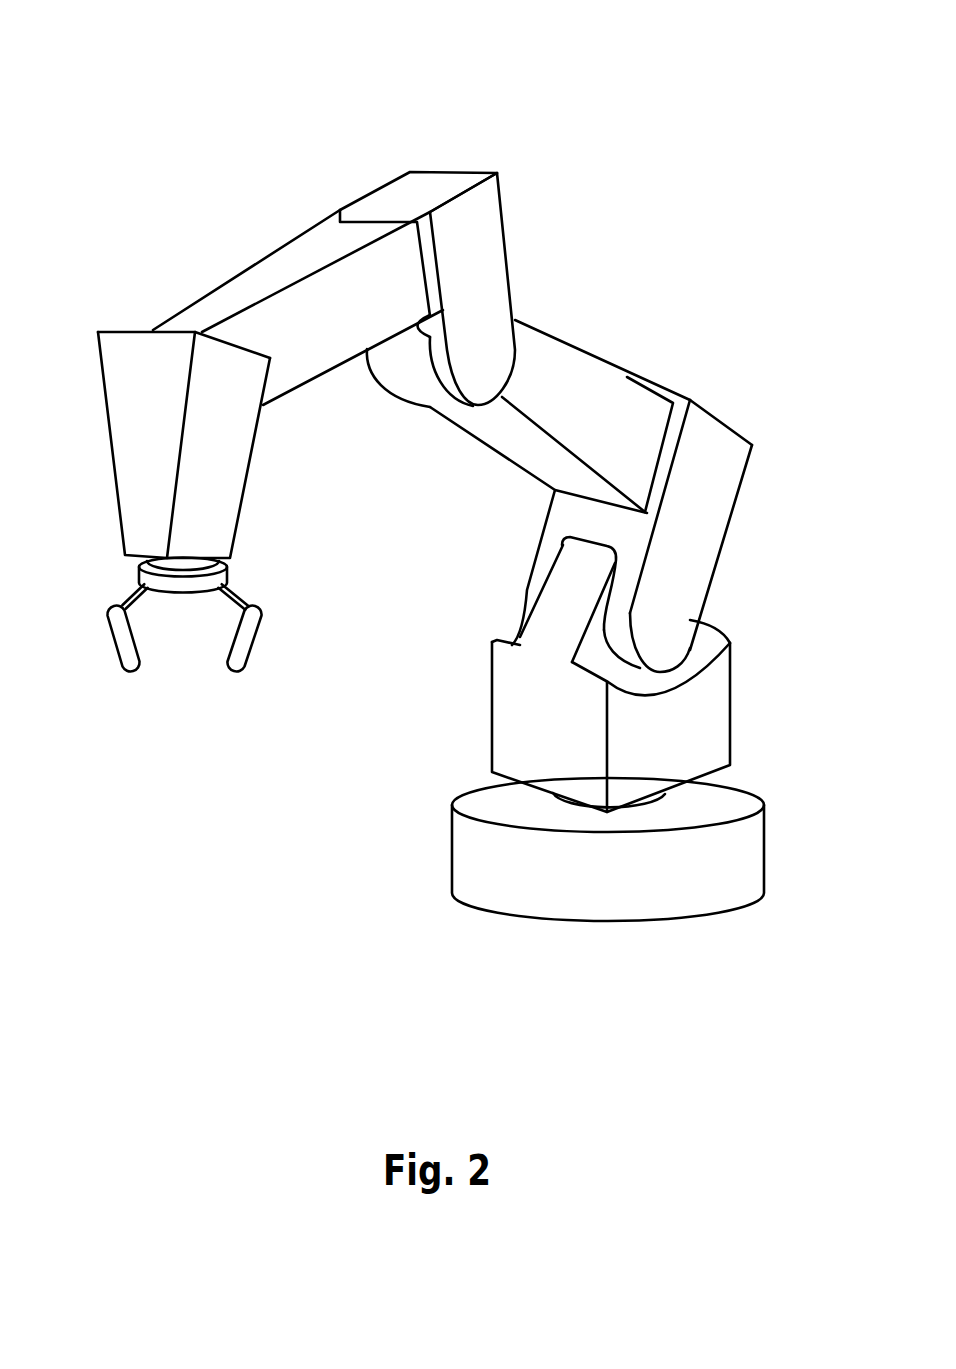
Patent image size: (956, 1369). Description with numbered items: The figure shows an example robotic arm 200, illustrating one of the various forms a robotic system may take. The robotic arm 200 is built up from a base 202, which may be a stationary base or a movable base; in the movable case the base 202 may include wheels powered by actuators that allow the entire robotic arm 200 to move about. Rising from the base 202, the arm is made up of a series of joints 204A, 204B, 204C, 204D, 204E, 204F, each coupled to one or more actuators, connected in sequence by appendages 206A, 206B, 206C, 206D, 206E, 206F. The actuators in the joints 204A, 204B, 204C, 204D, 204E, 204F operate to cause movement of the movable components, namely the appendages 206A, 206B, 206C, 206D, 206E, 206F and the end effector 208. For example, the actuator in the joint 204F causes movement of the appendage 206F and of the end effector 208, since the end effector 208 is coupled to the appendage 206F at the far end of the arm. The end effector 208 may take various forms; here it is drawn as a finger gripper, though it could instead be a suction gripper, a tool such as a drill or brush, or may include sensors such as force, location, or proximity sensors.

The robotic arm 200 is at (70, 69).
The base 202 is at (740, 864).
The joint 204A is at (559, 802).
The joint 204B is at (688, 625).
The joint 204C is at (745, 481).
The joint 204D is at (480, 380).
The joint 204E is at (503, 207).
The joint 204F is at (150, 331).
The appendage 206A is at (713, 730).
The appendage 206B is at (714, 544).
The appendage 206C is at (617, 387).
The appendage 206D is at (488, 273).
The appendage 206E is at (281, 268).
The appendage 206F is at (213, 453).
The end effector 208 is at (252, 618).